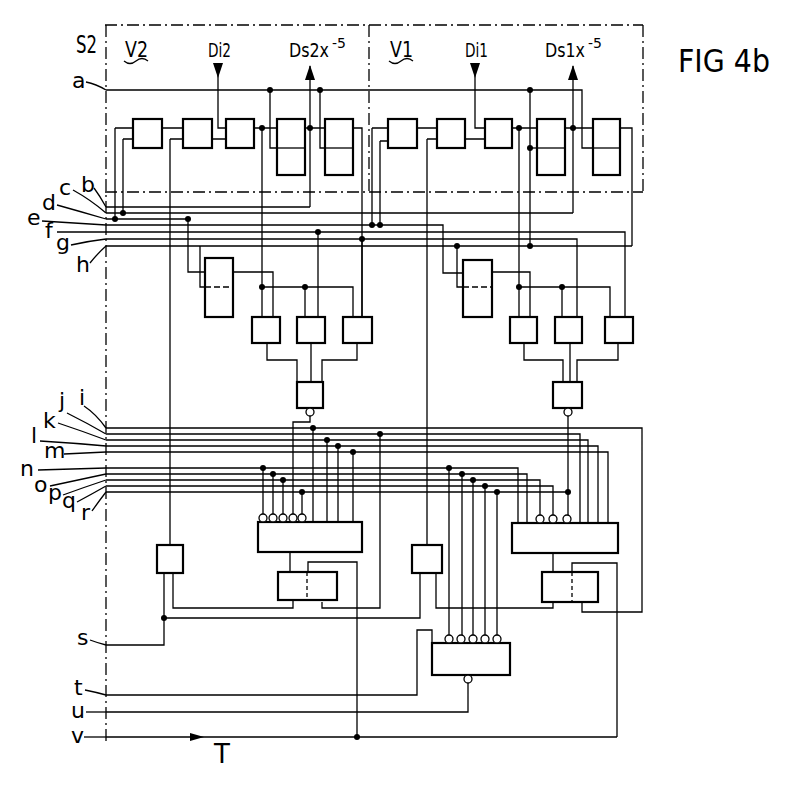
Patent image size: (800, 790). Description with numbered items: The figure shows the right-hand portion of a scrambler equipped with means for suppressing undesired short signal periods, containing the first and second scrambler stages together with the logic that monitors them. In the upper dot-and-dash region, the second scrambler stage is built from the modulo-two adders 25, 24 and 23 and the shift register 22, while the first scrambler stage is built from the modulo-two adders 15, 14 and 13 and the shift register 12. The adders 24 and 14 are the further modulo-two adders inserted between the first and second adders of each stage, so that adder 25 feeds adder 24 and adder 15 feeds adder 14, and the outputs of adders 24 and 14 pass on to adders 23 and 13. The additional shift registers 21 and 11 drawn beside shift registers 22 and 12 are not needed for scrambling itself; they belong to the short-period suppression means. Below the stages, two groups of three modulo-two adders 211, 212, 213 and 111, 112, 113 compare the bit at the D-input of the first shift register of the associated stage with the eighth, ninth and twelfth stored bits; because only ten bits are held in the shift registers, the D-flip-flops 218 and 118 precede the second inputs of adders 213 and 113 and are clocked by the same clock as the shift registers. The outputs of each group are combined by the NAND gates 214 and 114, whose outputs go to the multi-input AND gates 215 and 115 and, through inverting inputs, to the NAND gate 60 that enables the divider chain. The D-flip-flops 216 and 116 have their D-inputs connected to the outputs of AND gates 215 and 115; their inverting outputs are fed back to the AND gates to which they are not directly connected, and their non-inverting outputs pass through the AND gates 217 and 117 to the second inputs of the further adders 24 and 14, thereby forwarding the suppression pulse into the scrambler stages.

The shift register 11 is at (597, 104).
The shift register 12 is at (542, 104).
The exclusive-OR gate 13 is at (490, 104).
The further modulo-2 adder 14 is at (442, 104).
The exclusive-OR gate 15 is at (394, 104).
The shift register 21 is at (329, 104).
The shift register 22 is at (281, 104).
The exclusive-OR gate 23 is at (232, 104).
The further modulo-2 adder 24 is at (188, 104).
The exclusive-OR gate 25 is at (139, 104).
The modulo-2 adder 111 is at (630, 317).
The modulo-2 adder 112 is at (580, 317).
The modulo-2 adder 113 is at (535, 317).
The NAND gate 114 is at (580, 411).
The AND gate 115 is at (565, 534).
The D-flipflop 116 is at (570, 587).
The AND gate 117 is at (406, 557).
The D-flipflop 118 is at (468, 325).
The modulo-2 adder 211 is at (374, 317).
The modulo-2 adder 212 is at (325, 317).
The modulo-2 adder 213 is at (279, 317).
The NAND gate 214 is at (323, 411).
The AND gate 215 is at (310, 533).
The D-flipflop 216 is at (307, 586).
The AND gate 217 is at (183, 554).
The D-flipflop 218 is at (204, 325).
The NAND gate 60 is at (511, 673).